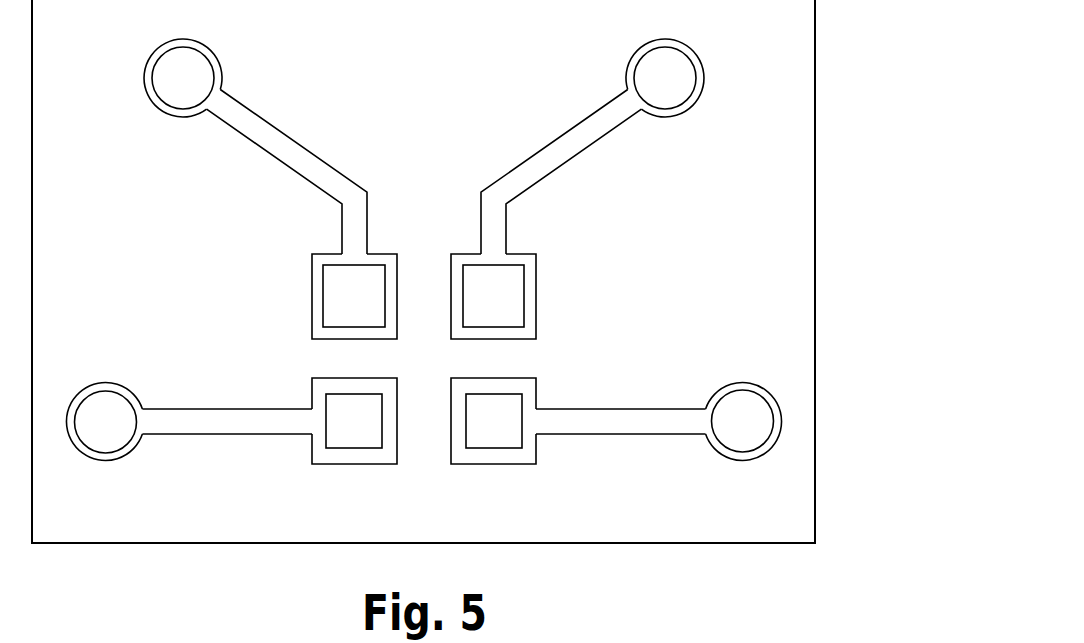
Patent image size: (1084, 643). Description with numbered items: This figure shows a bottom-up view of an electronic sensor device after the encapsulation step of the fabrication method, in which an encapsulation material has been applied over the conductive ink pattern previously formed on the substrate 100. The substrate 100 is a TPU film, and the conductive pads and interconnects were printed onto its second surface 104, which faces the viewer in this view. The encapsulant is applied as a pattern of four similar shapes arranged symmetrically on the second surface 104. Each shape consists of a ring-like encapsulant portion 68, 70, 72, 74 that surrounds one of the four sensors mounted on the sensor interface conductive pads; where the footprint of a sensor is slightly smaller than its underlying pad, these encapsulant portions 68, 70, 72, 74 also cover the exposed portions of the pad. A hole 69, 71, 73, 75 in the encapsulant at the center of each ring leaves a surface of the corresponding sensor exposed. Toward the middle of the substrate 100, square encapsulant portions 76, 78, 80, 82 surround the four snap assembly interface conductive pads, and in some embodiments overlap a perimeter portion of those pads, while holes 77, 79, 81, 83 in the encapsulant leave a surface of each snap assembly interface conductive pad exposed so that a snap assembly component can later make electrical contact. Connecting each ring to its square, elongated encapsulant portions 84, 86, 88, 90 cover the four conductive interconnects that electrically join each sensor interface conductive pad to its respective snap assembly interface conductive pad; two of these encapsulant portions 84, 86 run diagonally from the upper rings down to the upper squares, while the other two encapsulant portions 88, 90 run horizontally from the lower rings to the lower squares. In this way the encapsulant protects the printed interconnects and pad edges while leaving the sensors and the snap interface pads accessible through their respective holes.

The substrate 100 is at (815, 160).
The second surface 104 is at (788, 85).
The encapsulant portion 68 is at (147, 95).
The hole 69 is at (184, 98).
The encapsulant portion 70 is at (700, 95).
The hole 71 is at (663, 98).
The encapsulant portion 72 is at (752, 382).
The hole 73 is at (738, 439).
The encapsulant portion 74 is at (97, 383).
The hole 75 is at (108, 440).
The encapsulant portion 76 is at (318, 288).
The hole 77 is at (333, 311).
The encapsulant portion 78 is at (528, 288).
The hole 79 is at (512, 310).
The encapsulant portion 80 is at (509, 458).
The hole 81 is at (489, 438).
The encapsulant portion 82 is at (372, 458).
The hole 83 is at (343, 438).
The encapsulant portion 84 is at (275, 138).
The encapsulant portion 86 is at (570, 137).
The encapsulant portion 88 is at (613, 424).
The encapsulant portion 90 is at (216, 424).